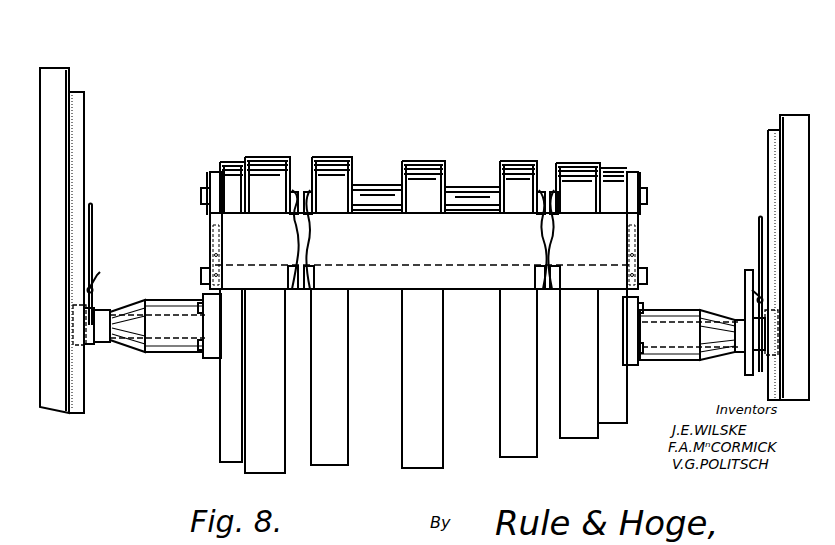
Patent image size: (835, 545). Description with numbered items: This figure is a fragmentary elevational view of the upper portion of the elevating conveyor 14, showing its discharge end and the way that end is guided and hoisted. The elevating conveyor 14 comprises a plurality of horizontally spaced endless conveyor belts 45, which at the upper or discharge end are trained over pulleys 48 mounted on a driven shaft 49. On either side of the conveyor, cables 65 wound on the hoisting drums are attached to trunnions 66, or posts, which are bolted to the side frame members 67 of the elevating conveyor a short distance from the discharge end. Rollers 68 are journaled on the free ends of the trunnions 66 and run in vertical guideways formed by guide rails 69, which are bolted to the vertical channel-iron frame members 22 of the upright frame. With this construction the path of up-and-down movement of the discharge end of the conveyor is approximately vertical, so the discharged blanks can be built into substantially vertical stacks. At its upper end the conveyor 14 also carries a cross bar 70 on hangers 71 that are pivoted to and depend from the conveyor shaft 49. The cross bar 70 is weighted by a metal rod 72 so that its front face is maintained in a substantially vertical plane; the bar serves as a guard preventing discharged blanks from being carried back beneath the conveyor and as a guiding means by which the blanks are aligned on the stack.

The elevating conveyor 14 is at (434, 152).
The vertical channel-iron frame members 22 is at (58, 72).
The endless conveyor belts 45 is at (418, 375).
The pulleys 48 is at (500, 172).
The driven shaft 49 is at (374, 192).
The cables 65 is at (92, 228).
The trunnions 66 is at (107, 310).
The side frame members 67 is at (228, 421).
The rollers 68 is at (82, 342).
The guide rails 69 is at (79, 127).
The cross bar 70 is at (389, 283).
The hangers 71 is at (206, 184).
The metal rod 72 is at (304, 295).